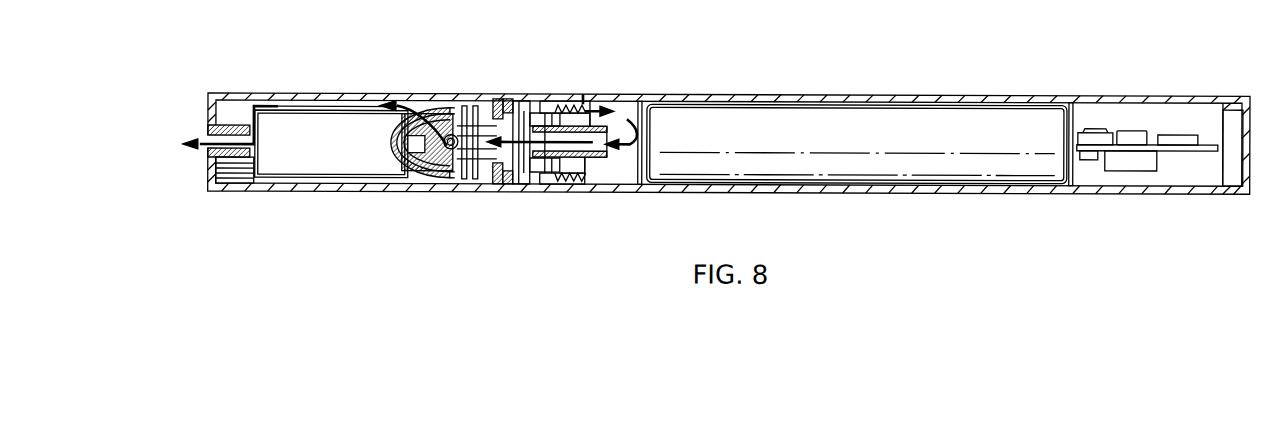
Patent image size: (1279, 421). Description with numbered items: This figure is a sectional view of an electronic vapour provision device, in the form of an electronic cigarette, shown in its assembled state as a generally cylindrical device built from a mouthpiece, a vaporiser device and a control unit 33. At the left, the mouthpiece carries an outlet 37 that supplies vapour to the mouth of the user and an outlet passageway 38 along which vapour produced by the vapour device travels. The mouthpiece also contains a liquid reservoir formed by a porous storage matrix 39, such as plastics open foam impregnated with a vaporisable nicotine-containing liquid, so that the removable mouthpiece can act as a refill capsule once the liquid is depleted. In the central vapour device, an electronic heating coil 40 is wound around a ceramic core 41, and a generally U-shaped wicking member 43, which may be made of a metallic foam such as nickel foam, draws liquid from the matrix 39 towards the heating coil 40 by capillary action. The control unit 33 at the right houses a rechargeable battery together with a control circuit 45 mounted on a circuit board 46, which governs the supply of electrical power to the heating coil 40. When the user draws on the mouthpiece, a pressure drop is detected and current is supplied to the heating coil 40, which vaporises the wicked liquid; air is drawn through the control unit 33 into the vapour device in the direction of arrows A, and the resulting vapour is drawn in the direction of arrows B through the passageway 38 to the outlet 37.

The control unit 33 is at (871, 104).
The outlet 37 is at (213, 135).
The outlet passageway 38 is at (296, 105).
The porous storage matrix 39 is at (294, 172).
The heating coil 40 is at (458, 173).
The ceramic core 41 is at (458, 142).
The U-shaped wicking member 43 is at (392, 148).
The control circuit 45 is at (1188, 149).
The circuit board 46 is at (1150, 141).
The air inlet direction arrows A is at (583, 101).
The vapour outflow direction arrows B is at (412, 112).